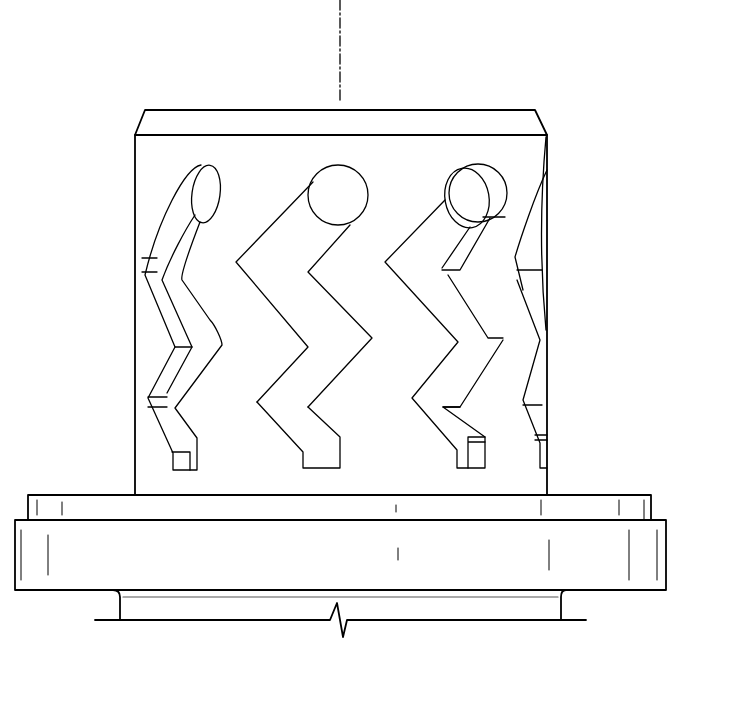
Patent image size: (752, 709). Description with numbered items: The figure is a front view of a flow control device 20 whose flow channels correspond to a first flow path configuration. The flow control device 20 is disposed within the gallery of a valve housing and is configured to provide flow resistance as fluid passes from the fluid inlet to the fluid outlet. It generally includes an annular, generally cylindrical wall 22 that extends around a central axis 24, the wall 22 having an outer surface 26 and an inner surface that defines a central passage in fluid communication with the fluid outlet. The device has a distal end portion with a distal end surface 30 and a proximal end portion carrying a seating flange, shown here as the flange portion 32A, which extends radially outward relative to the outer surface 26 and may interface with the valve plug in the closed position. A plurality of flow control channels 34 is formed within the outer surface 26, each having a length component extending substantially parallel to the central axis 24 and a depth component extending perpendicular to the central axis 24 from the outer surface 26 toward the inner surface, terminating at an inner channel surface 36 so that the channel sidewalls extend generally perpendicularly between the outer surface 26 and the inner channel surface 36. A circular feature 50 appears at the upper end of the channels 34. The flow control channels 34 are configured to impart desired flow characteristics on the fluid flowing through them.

The flow control device 20 is at (133, 68).
The cylindrical wall 22 is at (153, 159).
The central axis 24 is at (340, 37).
The outer surface 26 is at (152, 357).
The distal end surface 30 is at (518, 109).
The flange plate 32A is at (608, 495).
The flow control channels 34 is at (321, 311).
The inner channel surface 36 is at (290, 413).
The circular aperture 50 is at (335, 193).